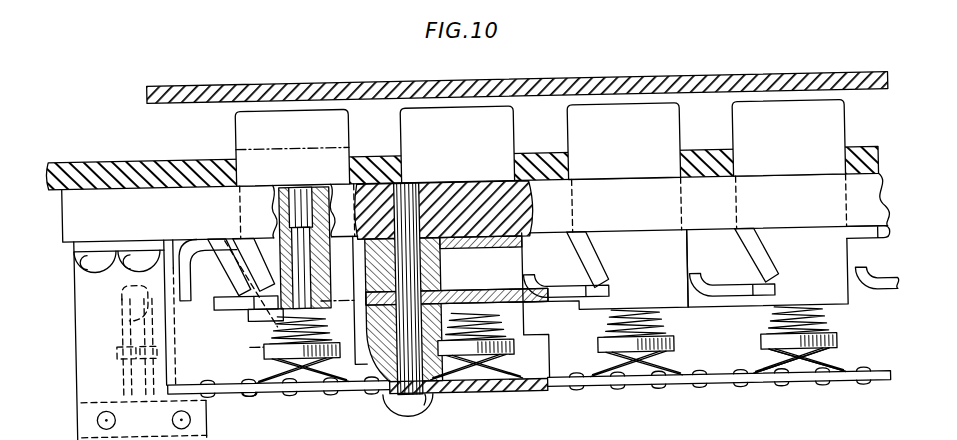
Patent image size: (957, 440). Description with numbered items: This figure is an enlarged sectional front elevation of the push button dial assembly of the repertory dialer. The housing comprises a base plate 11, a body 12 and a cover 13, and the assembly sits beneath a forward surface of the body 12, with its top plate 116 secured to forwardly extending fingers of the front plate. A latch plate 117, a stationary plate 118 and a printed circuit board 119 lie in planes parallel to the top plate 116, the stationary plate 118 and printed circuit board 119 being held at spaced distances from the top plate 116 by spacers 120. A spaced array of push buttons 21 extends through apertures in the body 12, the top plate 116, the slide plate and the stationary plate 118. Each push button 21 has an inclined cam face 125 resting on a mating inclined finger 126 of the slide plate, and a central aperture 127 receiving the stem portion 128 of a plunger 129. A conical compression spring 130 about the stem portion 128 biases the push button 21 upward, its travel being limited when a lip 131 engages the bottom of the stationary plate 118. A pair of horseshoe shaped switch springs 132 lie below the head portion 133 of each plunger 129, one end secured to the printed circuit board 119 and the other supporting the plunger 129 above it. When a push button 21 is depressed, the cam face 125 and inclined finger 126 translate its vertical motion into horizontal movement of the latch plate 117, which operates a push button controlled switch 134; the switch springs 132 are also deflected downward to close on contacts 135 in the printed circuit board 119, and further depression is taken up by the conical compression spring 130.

The base plate 11 is at (517, 100).
The body 12 is at (190, 154).
The cover 13 is at (228, 80).
The push buttons 21 is at (752, 107).
The top plate 116 is at (862, 196).
The latch plate 117 is at (550, 222).
The stationary plate 118 is at (878, 290).
The printed circuit board 119 is at (836, 392).
The spacers 120 is at (443, 278).
The inclined cam face 125 is at (752, 272).
The inclined finger 126 is at (737, 252).
The central aperture 127 is at (298, 184).
The stem portion 128 is at (298, 258).
The plunger 129 is at (296, 259).
The conical compression spring 130 is at (662, 320).
The lip 131 is at (572, 313).
The switch springs 132 is at (838, 374).
The head portion 133 is at (838, 346).
The push button controlled switch 134 is at (116, 365).
The contacts 135 is at (296, 392).